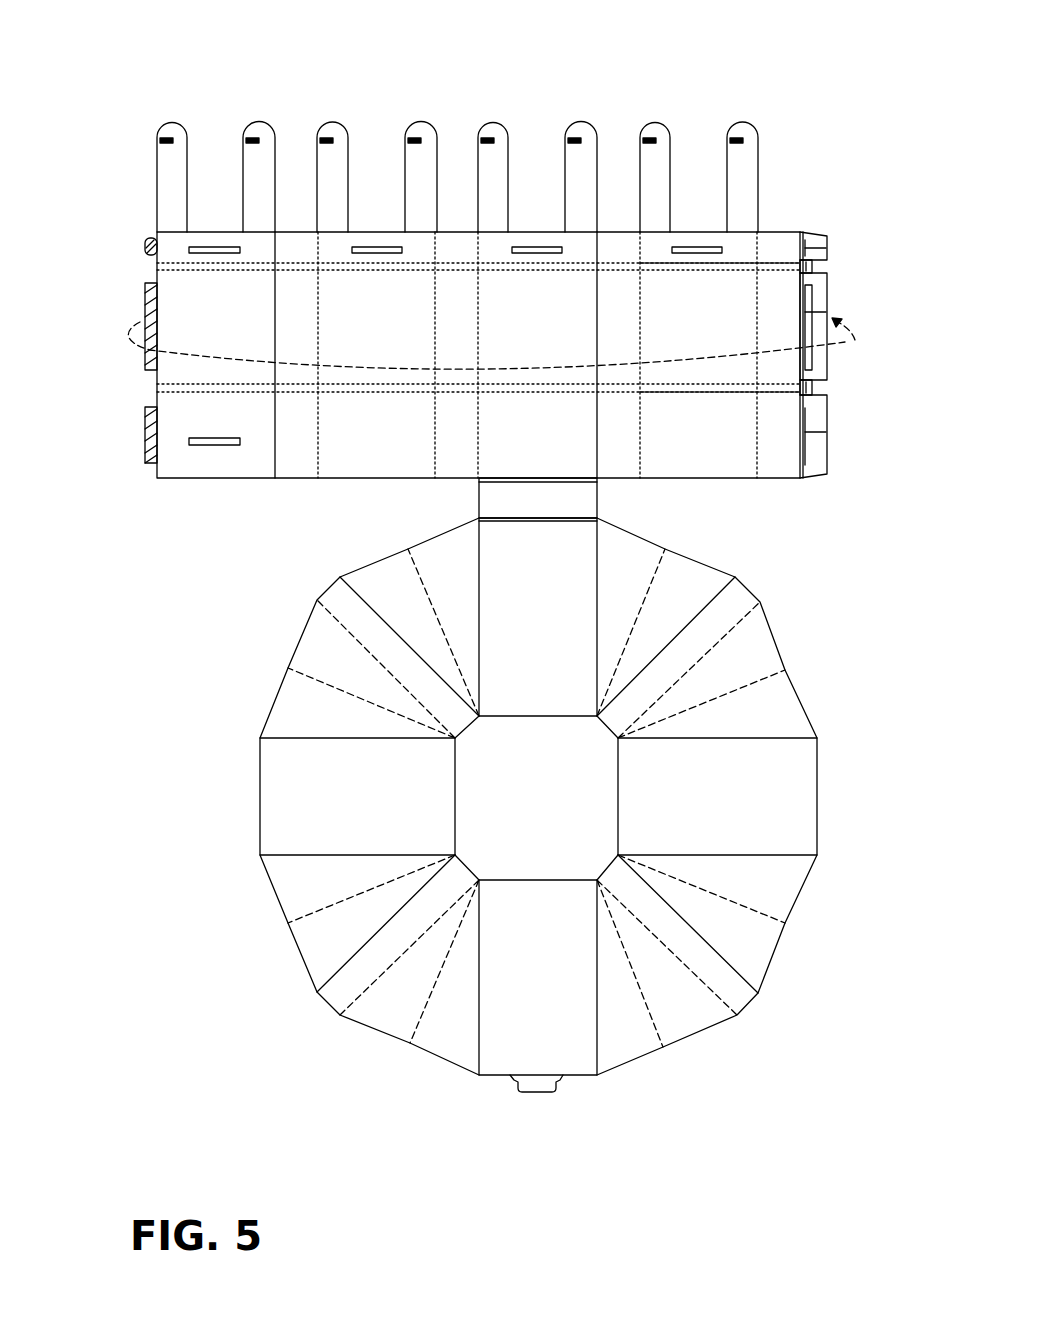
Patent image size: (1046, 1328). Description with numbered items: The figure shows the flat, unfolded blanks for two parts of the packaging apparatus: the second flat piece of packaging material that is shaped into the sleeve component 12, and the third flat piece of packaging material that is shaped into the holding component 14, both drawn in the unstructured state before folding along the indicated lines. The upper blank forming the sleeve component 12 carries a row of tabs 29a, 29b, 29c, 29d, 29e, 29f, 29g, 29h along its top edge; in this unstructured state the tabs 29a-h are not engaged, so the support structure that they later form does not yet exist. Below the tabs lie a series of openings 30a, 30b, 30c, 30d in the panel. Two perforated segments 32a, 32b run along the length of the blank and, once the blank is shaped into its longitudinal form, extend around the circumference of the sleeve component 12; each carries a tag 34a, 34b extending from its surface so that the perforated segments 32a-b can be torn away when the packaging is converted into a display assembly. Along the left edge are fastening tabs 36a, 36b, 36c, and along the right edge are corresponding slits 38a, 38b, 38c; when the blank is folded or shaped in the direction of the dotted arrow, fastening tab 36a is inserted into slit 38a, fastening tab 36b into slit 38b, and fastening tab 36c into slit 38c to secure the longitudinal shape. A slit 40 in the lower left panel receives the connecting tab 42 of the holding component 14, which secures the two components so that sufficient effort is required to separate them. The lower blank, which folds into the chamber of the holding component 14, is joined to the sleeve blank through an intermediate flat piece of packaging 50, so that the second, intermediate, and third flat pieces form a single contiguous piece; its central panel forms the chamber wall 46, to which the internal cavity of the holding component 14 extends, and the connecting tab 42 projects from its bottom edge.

The sleeve component 12 is at (796, 137).
The holding component 14 is at (292, 999).
The tab 29a is at (175, 133).
The tab 29b is at (260, 133).
The tab 29c is at (336, 133).
The tab 29d is at (420, 133).
The tab 29e is at (497, 133).
The tab 29f is at (584, 133).
The tab 29g is at (658, 133).
The tab 29h is at (744, 133).
The slot 30a is at (218, 243).
The slot 30b is at (360, 247).
The slot 30c is at (527, 247).
The slot 30d is at (707, 247).
The perforated segment 32a is at (742, 262).
The perforated segment 32b is at (742, 392).
The tag 34a is at (812, 268).
The tag 34b is at (812, 388).
The fastening tab 36a is at (145, 245).
The fastening tab 36b is at (145, 310).
The fastening tab 36c is at (145, 430).
The slit 38a is at (826, 244).
The slit 38b is at (826, 312).
The slit 38c is at (826, 432).
The slit 40 is at (222, 447).
The connecting tab 42 is at (538, 1097).
The chamber wall 46 is at (610, 780).
The intermediate flat piece of packaging 50 is at (594, 500).